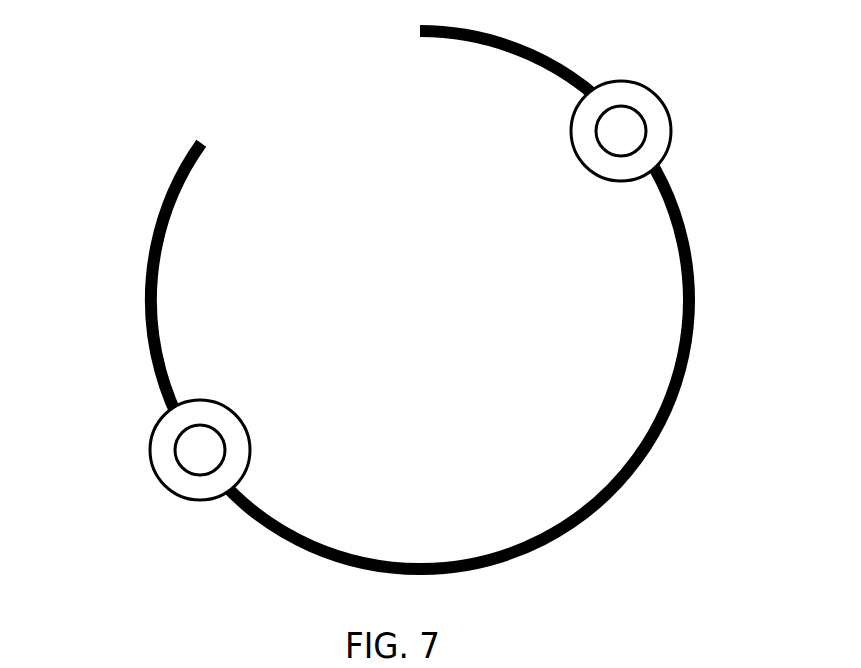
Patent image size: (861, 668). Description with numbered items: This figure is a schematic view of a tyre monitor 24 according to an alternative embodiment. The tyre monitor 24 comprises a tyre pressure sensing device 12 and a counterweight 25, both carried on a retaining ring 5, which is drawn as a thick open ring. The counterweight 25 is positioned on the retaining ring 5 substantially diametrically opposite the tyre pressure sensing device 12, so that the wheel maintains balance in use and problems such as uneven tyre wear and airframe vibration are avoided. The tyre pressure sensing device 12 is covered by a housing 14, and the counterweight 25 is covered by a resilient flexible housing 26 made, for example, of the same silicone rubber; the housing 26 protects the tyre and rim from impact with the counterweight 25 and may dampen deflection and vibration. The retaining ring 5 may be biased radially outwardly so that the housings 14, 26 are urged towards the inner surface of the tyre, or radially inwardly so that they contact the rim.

The retaining ring 5 is at (688, 372).
The tyre pressure sensing device 12 is at (622, 127).
The housing 14 is at (668, 147).
The tyre monitor 24 is at (122, 146).
The counterweight 25 is at (190, 453).
The resilient flexible housing 26 is at (182, 497).